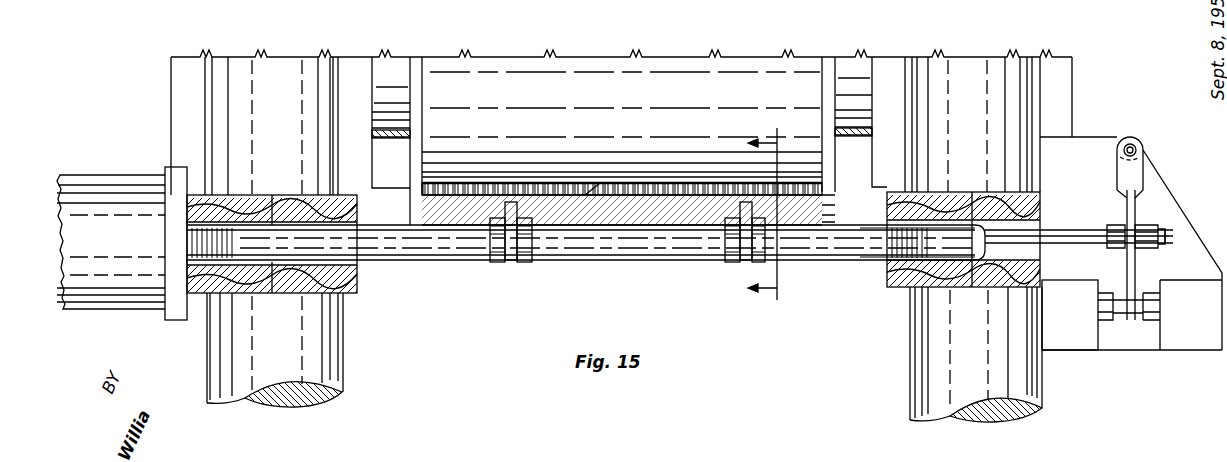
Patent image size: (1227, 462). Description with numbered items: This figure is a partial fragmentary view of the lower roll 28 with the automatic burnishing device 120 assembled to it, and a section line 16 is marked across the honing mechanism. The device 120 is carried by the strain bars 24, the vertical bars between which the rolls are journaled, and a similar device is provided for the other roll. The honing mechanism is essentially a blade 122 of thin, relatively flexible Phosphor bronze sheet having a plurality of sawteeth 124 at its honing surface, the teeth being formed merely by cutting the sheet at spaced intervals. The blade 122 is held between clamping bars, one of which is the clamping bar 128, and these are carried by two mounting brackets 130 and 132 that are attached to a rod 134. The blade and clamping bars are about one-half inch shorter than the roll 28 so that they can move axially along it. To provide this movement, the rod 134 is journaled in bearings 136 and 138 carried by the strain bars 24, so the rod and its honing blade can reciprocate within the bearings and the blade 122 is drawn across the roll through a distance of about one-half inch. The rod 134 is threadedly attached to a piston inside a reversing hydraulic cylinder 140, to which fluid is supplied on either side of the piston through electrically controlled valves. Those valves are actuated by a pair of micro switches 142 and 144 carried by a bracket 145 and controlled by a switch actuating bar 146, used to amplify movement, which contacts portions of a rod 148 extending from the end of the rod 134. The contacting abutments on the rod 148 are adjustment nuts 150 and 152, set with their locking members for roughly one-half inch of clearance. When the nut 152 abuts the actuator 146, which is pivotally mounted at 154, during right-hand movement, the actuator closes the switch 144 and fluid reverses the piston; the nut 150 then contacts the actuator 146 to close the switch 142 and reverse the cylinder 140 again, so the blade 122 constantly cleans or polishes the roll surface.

The roll 28 is at (803, 57).
The section line 16 is at (770, 219).
The strain bar 24 is at (268, 408).
The burnishing device 120 is at (382, 262).
The blade 122 is at (617, 194).
The sawteeth 124 is at (592, 195).
The clamping bar 128 is at (822, 210).
The mounting bracket 130 is at (745, 265).
The mounting bracket 132 is at (507, 265).
The rod 134 is at (862, 250).
The bearing 136 is at (327, 272).
The bearing 138 is at (908, 264).
The hydraulic cylinder 140 is at (117, 312).
The micro switch 142 is at (1057, 346).
The micro switch 144 is at (1178, 346).
The bracket 145 is at (1182, 219).
The switch actuating bar 146 is at (1137, 273).
The rod 148 is at (1069, 230).
The adjustment nut 150 is at (1152, 220).
The adjustment nut 152 is at (1117, 250).
The pivot 154 is at (1132, 144).